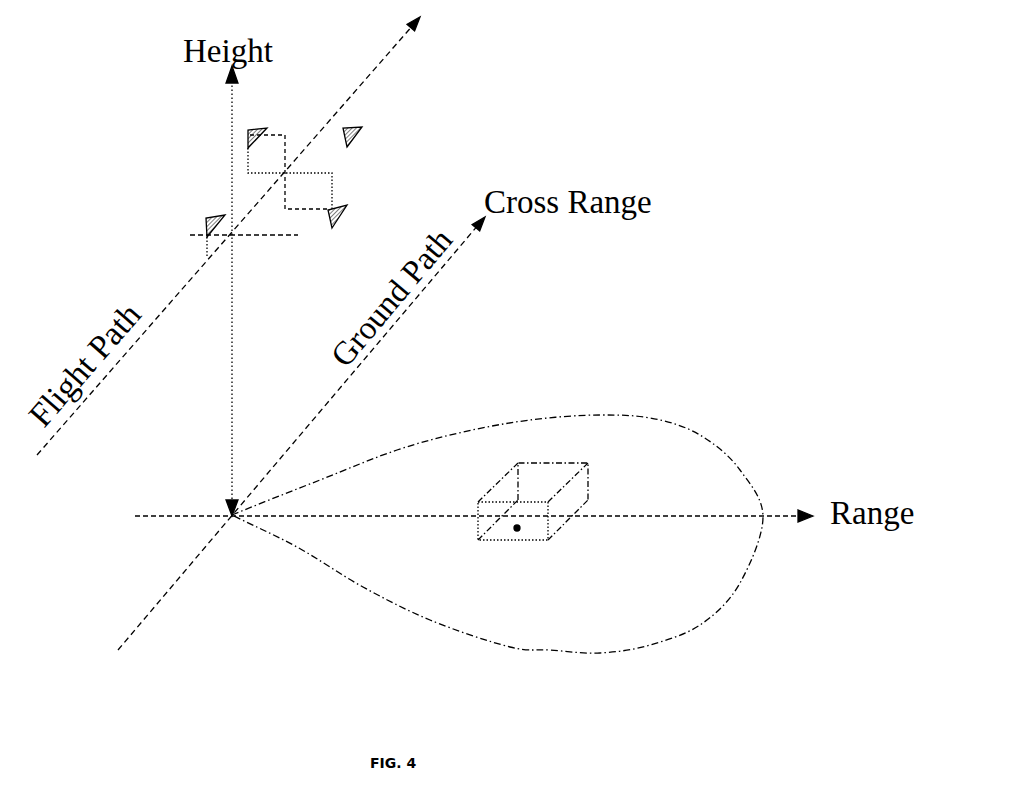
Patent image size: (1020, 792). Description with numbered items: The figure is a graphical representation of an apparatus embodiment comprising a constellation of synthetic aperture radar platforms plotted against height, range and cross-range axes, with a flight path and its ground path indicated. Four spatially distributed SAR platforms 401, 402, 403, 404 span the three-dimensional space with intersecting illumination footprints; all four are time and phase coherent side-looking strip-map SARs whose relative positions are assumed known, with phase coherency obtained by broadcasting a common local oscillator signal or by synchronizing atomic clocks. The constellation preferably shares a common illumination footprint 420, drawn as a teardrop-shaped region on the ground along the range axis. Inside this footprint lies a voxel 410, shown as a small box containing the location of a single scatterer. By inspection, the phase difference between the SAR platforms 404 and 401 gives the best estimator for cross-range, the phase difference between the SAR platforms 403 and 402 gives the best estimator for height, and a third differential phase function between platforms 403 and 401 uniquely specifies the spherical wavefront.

The SAR platform 401 is at (207, 218).
The SAR platform 402 is at (248, 134).
The SAR platform 403 is at (347, 209).
The SAR platform 404 is at (362, 127).
The voxel 410 is at (478, 540).
The common illumination footprint 420 is at (676, 424).